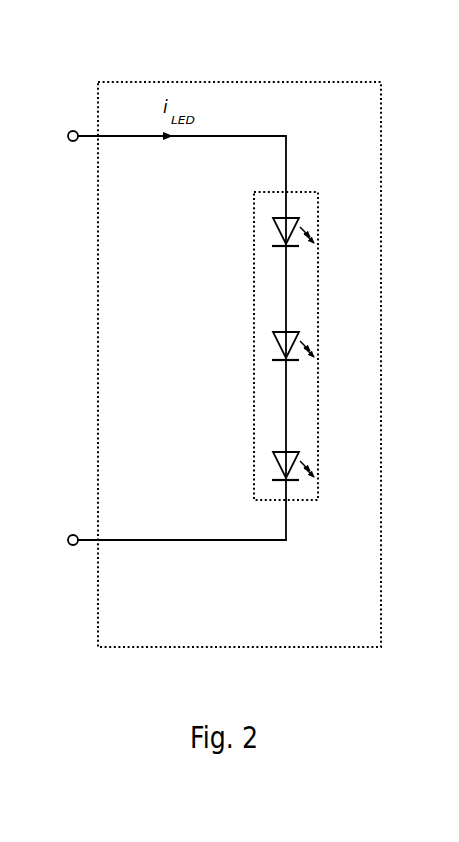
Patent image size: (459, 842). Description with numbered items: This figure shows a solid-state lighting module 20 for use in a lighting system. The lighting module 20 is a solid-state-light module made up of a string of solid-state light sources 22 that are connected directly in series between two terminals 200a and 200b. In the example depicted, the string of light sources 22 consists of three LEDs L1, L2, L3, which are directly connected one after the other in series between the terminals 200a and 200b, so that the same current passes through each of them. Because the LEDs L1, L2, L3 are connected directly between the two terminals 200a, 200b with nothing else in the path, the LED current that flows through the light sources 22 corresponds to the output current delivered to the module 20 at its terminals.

The lighting module 20 is at (356, 80).
The terminal 200a is at (73, 131).
The terminal 200b is at (73, 545).
The solid-state light sources 22 is at (303, 504).
The LED L1 is at (298, 218).
The LED L2 is at (298, 332).
The LED L3 is at (298, 452).